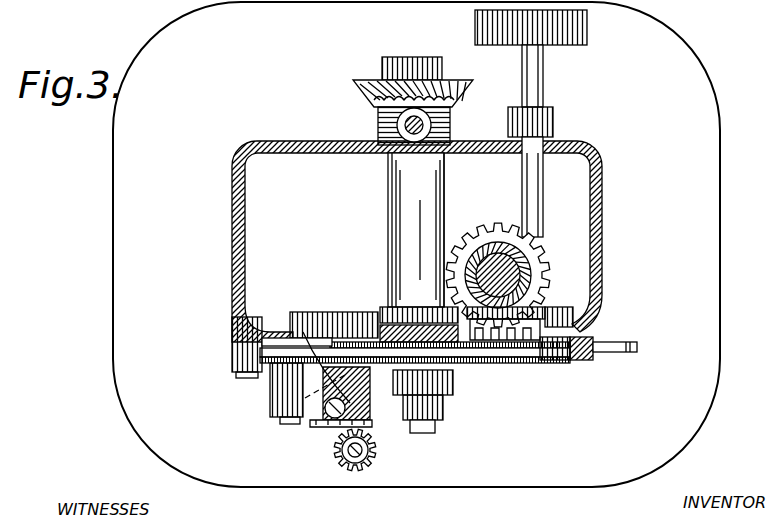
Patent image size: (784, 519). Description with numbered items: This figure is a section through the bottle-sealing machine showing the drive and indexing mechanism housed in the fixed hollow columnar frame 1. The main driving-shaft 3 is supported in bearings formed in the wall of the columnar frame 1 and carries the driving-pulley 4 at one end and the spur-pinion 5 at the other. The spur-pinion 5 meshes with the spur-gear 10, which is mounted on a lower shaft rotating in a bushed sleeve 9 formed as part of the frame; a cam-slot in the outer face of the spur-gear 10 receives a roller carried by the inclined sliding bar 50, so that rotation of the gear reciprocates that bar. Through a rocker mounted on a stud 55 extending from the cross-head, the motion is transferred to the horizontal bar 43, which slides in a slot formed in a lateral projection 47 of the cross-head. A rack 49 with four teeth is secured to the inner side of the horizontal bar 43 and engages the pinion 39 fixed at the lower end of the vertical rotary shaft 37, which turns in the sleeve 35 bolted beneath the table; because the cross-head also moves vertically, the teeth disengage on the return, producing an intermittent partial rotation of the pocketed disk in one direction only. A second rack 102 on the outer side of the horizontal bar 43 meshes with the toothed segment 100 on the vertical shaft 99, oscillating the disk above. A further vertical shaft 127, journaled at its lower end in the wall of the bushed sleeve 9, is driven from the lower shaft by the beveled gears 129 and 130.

The columnar frame 1 is at (603, 241).
The main driving-shaft 3 is at (545, 80).
The driving-pulley 4 is at (588, 38).
The spur-pinion 5 is at (578, 313).
The bushed sleeve 9 is at (397, 200).
The spur-gear 10 is at (300, 313).
The sleeve 35 is at (540, 292).
The vertical rotary shaft 37 is at (517, 262).
The pinion 39 is at (481, 230).
The horizontal bar 43 is at (497, 362).
The lateral projection 47 is at (593, 332).
The rack 49 is at (490, 340).
The inclined sliding bar 50 is at (607, 353).
The stud 55 is at (416, 434).
The vertical shaft 99 is at (352, 458).
The toothed segment 100 is at (364, 455).
The rack 102 is at (315, 426).
The vertical shaft 127 is at (378, 123).
The beveled gear 129 is at (372, 82).
The beveled gear 130 is at (455, 80).